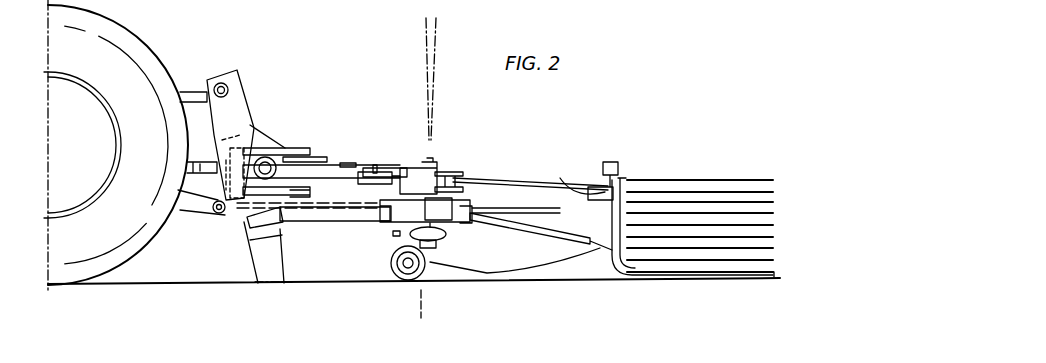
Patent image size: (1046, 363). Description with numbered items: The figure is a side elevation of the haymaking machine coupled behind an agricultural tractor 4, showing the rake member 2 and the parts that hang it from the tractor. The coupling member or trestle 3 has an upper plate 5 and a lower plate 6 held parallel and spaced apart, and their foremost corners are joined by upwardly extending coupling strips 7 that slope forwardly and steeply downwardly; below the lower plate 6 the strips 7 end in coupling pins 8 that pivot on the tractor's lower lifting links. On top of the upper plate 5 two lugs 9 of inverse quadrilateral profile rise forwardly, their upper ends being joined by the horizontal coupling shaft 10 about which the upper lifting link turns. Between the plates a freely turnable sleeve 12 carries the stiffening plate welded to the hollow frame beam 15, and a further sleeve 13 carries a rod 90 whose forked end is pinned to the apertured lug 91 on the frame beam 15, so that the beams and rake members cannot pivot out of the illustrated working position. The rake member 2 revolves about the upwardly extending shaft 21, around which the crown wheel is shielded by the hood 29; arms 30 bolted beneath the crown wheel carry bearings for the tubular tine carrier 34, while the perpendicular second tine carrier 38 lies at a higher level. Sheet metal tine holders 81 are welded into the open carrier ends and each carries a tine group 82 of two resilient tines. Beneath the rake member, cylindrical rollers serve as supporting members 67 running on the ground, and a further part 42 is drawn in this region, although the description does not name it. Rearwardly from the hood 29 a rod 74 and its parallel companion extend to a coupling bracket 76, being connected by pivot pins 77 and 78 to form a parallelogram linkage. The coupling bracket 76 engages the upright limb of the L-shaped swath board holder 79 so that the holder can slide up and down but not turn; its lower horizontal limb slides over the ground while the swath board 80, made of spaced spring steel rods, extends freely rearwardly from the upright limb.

The rake member 2 is at (250, 279).
The coupling member or trestle 3 is at (249, 103).
The agricultural tractor 4 is at (143, 34).
The upper plate 5 is at (300, 152).
The lower plate 6 is at (230, 212).
The coupling strips 7 is at (228, 152).
The coupling pins 8 is at (216, 208).
The lugs 9 is at (279, 150).
The coupling shaft 10 is at (223, 86).
The freely turnable sleeve 12 is at (331, 164).
The sleeve 13 is at (249, 142).
The hollow frame beam 15 is at (346, 163).
The upwardly extending shaft 21 is at (432, 160).
The hood 29 is at (452, 172).
The arms 30 is at (456, 208).
The tine carrier 34 is at (448, 236).
The second tine carrier 38 is at (343, 221).
The fitting 42 is at (395, 234).
The supporting members 67 is at (405, 279).
The rod 74 is at (498, 179).
The coupling bracket 76 is at (570, 190).
The pivot pin 77 is at (592, 186).
The pivot pin 78 is at (620, 180).
The swath board holder 79 is at (620, 268).
The swath board 80 is at (722, 178).
The tine holders 81 is at (250, 224).
The tine group 82 is at (280, 248).
The rod 90 is at (374, 165).
The apertured lug 91 is at (389, 171).